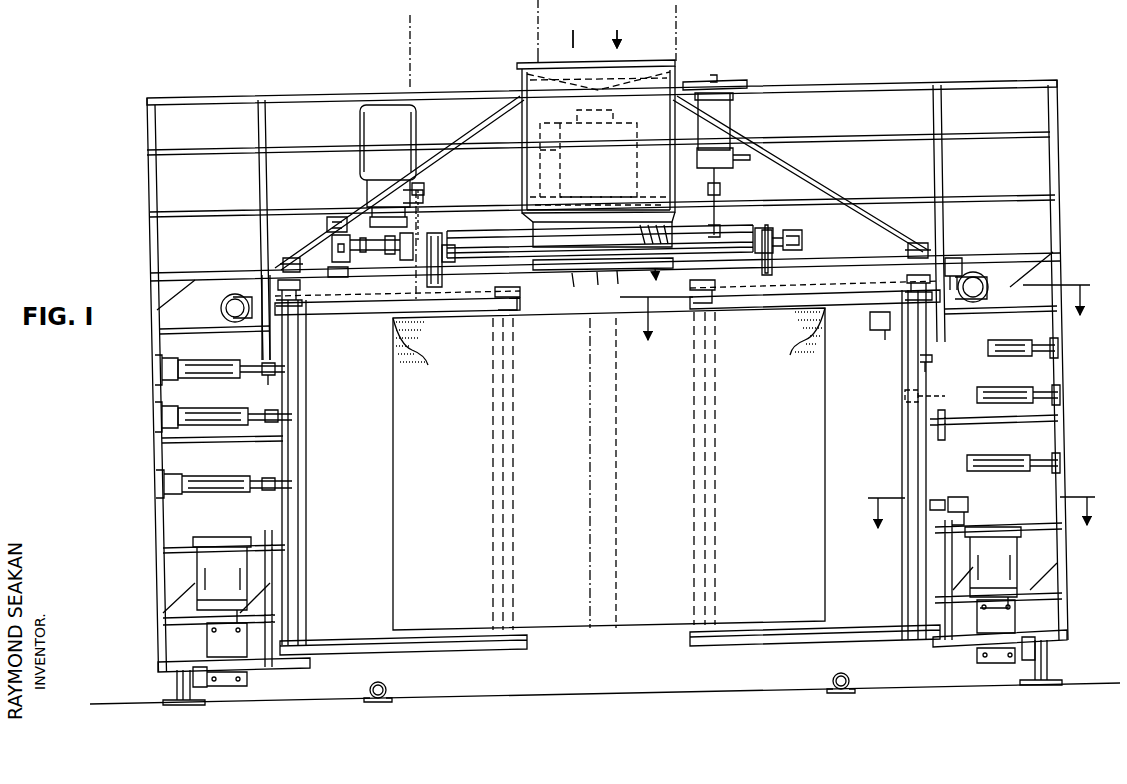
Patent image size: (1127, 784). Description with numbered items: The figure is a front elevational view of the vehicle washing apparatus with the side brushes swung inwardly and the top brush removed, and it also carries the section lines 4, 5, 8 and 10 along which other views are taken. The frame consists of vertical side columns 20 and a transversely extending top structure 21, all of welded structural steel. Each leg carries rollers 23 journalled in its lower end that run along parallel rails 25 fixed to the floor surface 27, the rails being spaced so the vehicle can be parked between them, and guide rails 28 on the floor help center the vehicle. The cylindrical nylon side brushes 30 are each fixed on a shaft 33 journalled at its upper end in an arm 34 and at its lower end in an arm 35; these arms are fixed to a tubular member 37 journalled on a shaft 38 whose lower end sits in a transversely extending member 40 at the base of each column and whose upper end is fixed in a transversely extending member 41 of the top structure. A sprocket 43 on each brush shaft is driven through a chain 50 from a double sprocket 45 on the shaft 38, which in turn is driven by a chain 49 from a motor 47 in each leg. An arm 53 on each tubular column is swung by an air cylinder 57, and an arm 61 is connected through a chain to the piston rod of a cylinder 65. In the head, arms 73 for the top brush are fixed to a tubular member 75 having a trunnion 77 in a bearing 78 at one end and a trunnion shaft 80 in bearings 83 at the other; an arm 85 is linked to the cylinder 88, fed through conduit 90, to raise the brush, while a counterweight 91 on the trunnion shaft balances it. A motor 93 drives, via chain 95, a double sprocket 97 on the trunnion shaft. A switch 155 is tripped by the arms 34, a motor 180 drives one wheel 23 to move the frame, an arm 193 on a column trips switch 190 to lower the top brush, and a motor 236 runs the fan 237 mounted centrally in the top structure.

The section line 4- 4 is at (408, 37).
The section line 5- 5 is at (675, 21).
The section line 8- 8 is at (855, 323).
The section line 10- 10 is at (984, 525).
The side column 20 is at (150, 412).
The top structure 21 is at (857, 80).
The roller 23 is at (205, 686).
The rail 25 is at (180, 700).
The floor surface 27 is at (560, 696).
The guide rail 28 is at (388, 686).
The side brush 30 is at (609, 469).
The shaft 33 is at (500, 304).
The upper arm 34 is at (433, 314).
The lower arm 35 is at (366, 638).
The tubular member 37 is at (307, 560).
The shaft 38 is at (292, 258).
The transversely extending member 40 is at (258, 666).
The transversely extending member 41 is at (232, 270).
The sprocket 43 is at (558, 268).
The double sprocket 45 is at (312, 305).
The motor 47 is at (220, 311).
The chain 49 is at (952, 262).
The chain 50 is at (375, 303).
The arm 53 is at (290, 384).
The air cylinder 57 is at (221, 365).
The arm 61 is at (905, 396).
The cylinder 65 is at (228, 418).
The arm 73 is at (445, 264).
The tubular member 75 is at (500, 244).
The trunnion 77 is at (806, 239).
The bearing 78 is at (790, 233).
The trunnion shaft 80 is at (365, 262).
The bearing 83 is at (355, 240).
The arm 85 is at (737, 258).
The cylinder 88 is at (733, 125).
The conduit 90 is at (742, 162).
The counterweight 91 is at (340, 225).
The motor 93 is at (416, 130).
The chain 95 is at (420, 225).
The double sprocket 97 is at (432, 240).
The switch 155 is at (876, 331).
The motor 180 is at (208, 555).
The switch 190 is at (969, 505).
The arm 193 is at (948, 494).
The motor 236 is at (520, 158).
The fan 237 is at (530, 70).